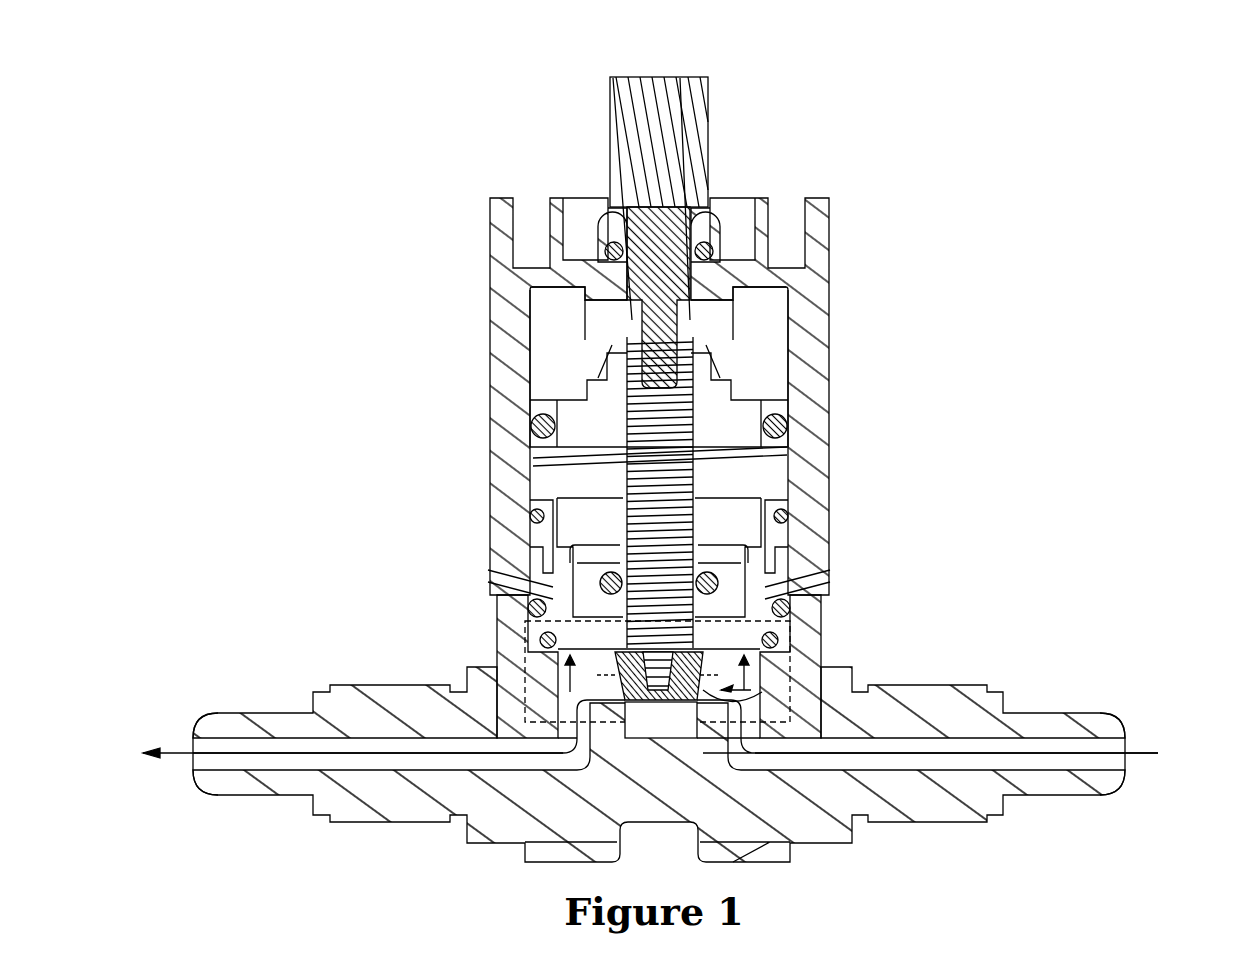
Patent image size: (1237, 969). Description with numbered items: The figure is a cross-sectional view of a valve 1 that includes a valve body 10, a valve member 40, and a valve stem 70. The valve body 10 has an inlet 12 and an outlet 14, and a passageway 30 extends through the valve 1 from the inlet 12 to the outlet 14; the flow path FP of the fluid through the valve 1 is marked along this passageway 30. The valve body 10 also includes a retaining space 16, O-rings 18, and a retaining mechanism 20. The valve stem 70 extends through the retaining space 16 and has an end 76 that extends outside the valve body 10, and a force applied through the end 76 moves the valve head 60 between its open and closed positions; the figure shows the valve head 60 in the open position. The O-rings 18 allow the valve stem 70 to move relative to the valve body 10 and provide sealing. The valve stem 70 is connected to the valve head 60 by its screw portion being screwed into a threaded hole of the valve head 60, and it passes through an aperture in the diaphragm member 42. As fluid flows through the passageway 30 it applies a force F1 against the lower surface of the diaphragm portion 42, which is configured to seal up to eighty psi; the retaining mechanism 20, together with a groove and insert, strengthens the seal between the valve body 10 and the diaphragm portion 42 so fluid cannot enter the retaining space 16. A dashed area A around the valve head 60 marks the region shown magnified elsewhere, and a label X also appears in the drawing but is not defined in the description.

The valve 1 is at (1015, 130).
The valve body 10 is at (830, 553).
The inlet 12 is at (1127, 741).
The outlet 14 is at (192, 760).
The retaining space 16 is at (550, 320).
The O-rings 18 is at (719, 210).
The retaining mechanism 20 is at (525, 520).
The passageway 30 is at (398, 760).
The valve member 40 is at (795, 690).
The diaphragm member 42 is at (528, 597).
The valve head 60 is at (787, 705).
The valve stem 70 is at (710, 355).
The end of the valve stem 76 is at (660, 76).
The area A is at (520, 635).
The force F1 is at (523, 658).
The gap X is at (666, 673).
The flow path FP is at (690, 755).